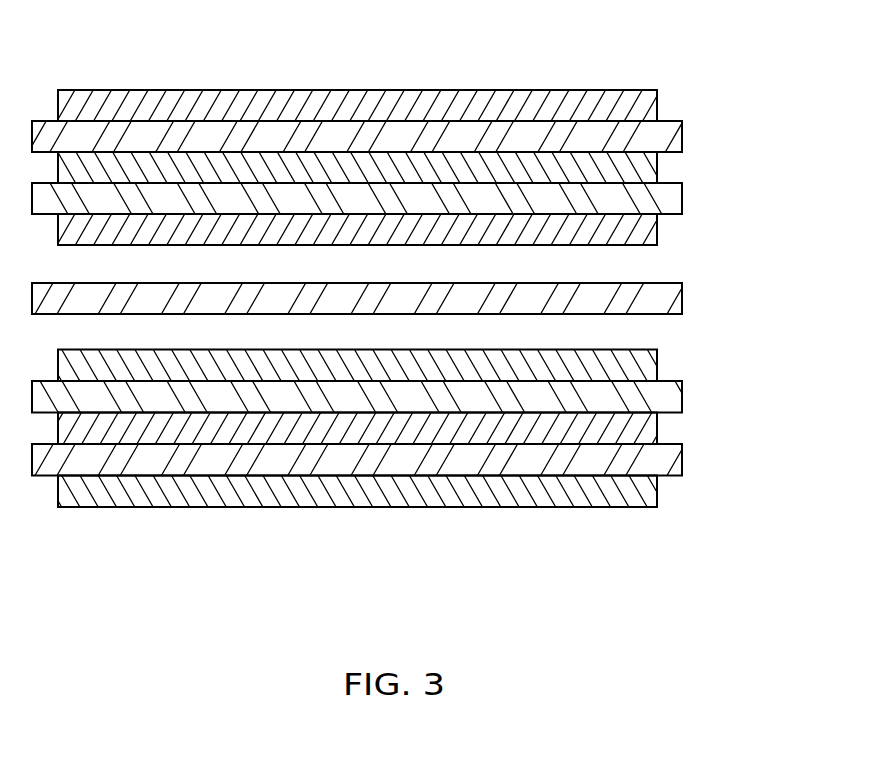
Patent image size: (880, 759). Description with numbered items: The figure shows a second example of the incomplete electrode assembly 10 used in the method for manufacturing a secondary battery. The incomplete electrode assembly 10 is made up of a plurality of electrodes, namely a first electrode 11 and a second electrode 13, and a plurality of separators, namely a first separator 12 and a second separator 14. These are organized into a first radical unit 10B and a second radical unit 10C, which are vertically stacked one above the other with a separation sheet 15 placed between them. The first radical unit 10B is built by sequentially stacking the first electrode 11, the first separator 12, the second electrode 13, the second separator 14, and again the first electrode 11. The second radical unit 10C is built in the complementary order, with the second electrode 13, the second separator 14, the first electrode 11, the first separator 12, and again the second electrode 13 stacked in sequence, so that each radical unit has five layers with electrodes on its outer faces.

The incomplete electrode assembly 10 is at (790, 31).
The first radical unit 10B is at (745, 96).
The second radical unit 10C is at (745, 362).
The first electrode 11 is at (657, 100).
The first separator 12 is at (682, 136).
The second electrode 13 is at (657, 165).
The second separator 14 is at (682, 198).
The separation sheet 15 is at (682, 297).